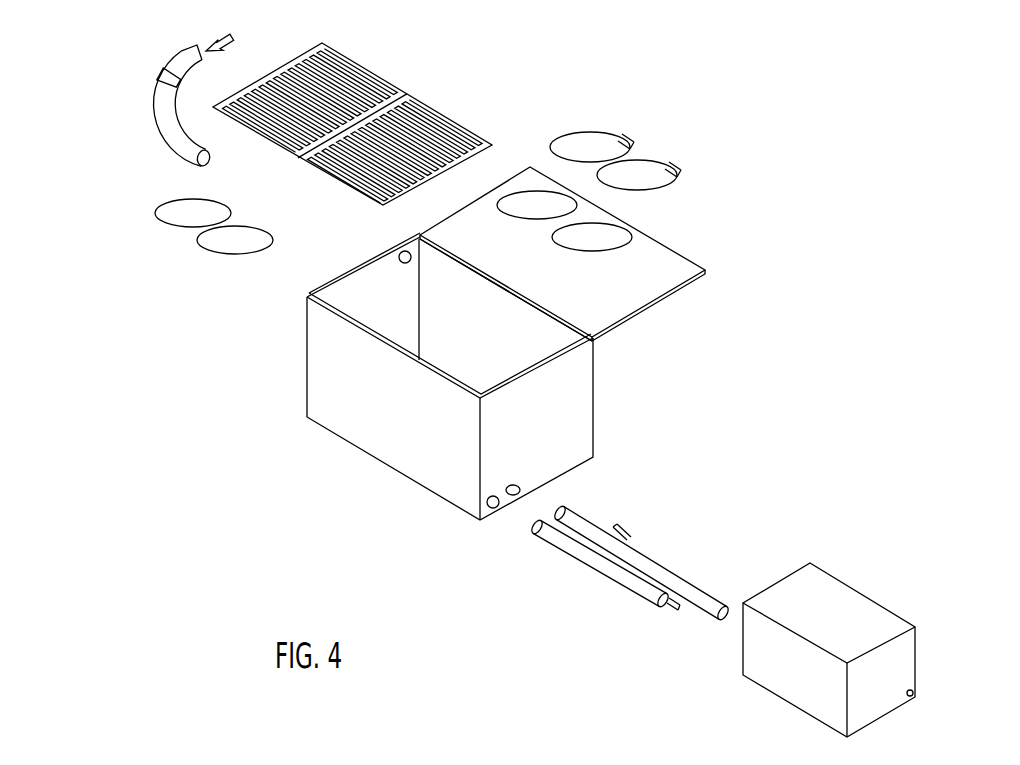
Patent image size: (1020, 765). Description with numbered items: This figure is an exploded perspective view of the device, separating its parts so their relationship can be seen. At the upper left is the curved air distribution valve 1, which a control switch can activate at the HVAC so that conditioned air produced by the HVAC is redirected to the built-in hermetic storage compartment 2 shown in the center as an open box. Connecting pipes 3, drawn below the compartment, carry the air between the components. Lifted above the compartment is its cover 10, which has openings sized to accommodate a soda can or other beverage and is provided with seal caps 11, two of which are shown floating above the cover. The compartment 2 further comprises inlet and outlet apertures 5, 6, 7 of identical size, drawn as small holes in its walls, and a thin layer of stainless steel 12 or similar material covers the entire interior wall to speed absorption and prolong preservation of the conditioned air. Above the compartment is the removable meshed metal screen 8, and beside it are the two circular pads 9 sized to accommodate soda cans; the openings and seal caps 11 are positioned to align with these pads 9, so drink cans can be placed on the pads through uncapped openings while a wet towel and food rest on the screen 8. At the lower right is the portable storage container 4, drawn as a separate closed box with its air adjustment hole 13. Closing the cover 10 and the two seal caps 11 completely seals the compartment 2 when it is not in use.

The air distribution valve 1 is at (155, 82).
The hermetic storage compartment 2 is at (567, 440).
The connecting pipes 3 is at (160, 140).
The portable storage container 4 is at (845, 592).
The inlet and outlet aperture 5 is at (398, 258).
The inlet and outlet aperture 6 is at (505, 492).
The inlet and outlet aperture 7 is at (495, 509).
The removable meshed metal screen 8 is at (380, 70).
The circular pads 9 is at (203, 232).
The cover 10 is at (668, 242).
The seal caps 11 is at (590, 235).
The thin layer of stainless steel 12 is at (547, 333).
The air adjustment hole 13 is at (913, 691).